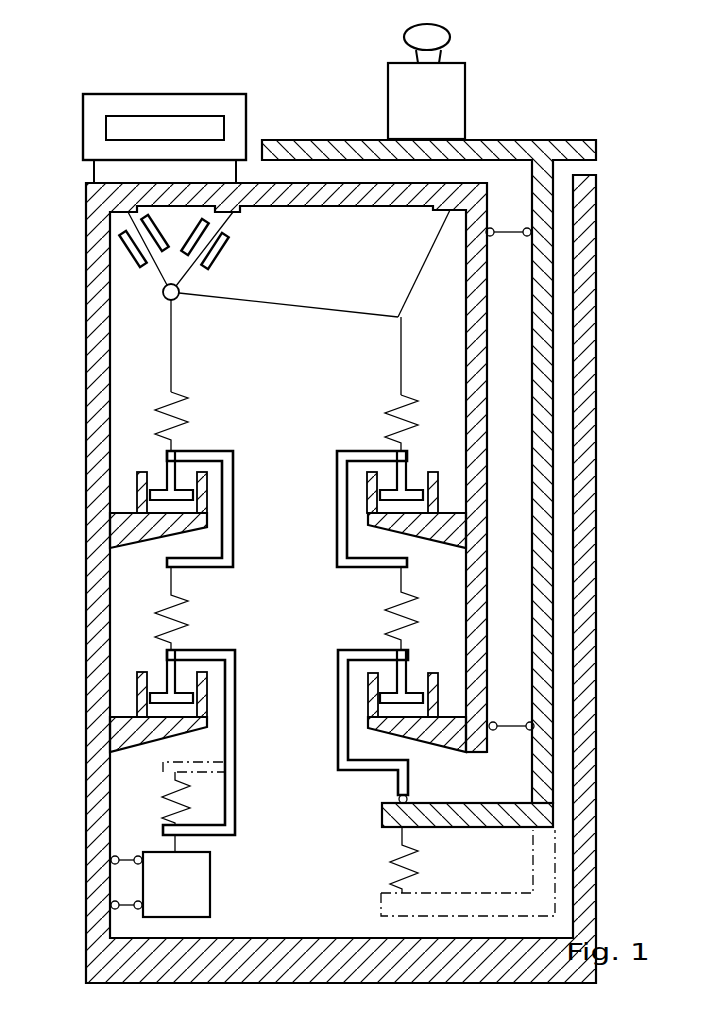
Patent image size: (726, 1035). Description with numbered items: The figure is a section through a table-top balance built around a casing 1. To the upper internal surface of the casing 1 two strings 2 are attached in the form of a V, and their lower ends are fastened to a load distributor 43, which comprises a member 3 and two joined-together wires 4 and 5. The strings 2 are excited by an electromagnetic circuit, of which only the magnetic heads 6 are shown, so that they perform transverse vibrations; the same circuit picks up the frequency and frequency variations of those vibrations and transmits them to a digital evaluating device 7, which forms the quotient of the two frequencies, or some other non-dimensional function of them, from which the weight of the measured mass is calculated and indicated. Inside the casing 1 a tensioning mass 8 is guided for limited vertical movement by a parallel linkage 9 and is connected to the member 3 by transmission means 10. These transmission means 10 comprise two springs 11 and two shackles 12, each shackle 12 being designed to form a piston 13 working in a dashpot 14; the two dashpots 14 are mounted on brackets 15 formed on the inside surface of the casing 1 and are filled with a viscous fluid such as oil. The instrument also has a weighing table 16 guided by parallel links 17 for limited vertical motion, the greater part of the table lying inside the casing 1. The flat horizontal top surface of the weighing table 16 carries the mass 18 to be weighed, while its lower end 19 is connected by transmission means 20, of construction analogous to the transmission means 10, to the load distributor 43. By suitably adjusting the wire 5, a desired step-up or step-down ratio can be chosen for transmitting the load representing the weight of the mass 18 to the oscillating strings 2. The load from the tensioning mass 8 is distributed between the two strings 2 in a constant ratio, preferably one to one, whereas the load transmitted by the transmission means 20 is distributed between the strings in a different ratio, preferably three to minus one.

The casing 1 is at (100, 775).
The strings 2 is at (168, 281).
The member 3 is at (180, 288).
The wire 4 is at (317, 304).
The wire 5 is at (412, 289).
The magnetic heads 6 is at (190, 241).
The digital evaluating device 7 is at (172, 102).
The tensioning mass 8 is at (178, 917).
The parallel linkage 9 is at (134, 903).
The transmission means 10 is at (252, 835).
The springs 11 is at (183, 397).
The shackles 12 is at (203, 451).
The piston 13 is at (167, 462).
The dashpot 14 is at (137, 496).
The brackets 15 is at (120, 535).
The weighing table 16 is at (547, 257).
The parallel links 17 is at (509, 228).
The mass 18 is at (435, 100).
The lower end 19 is at (392, 818).
The transmission means 20 is at (320, 805).
The load distributor 43 is at (258, 244).